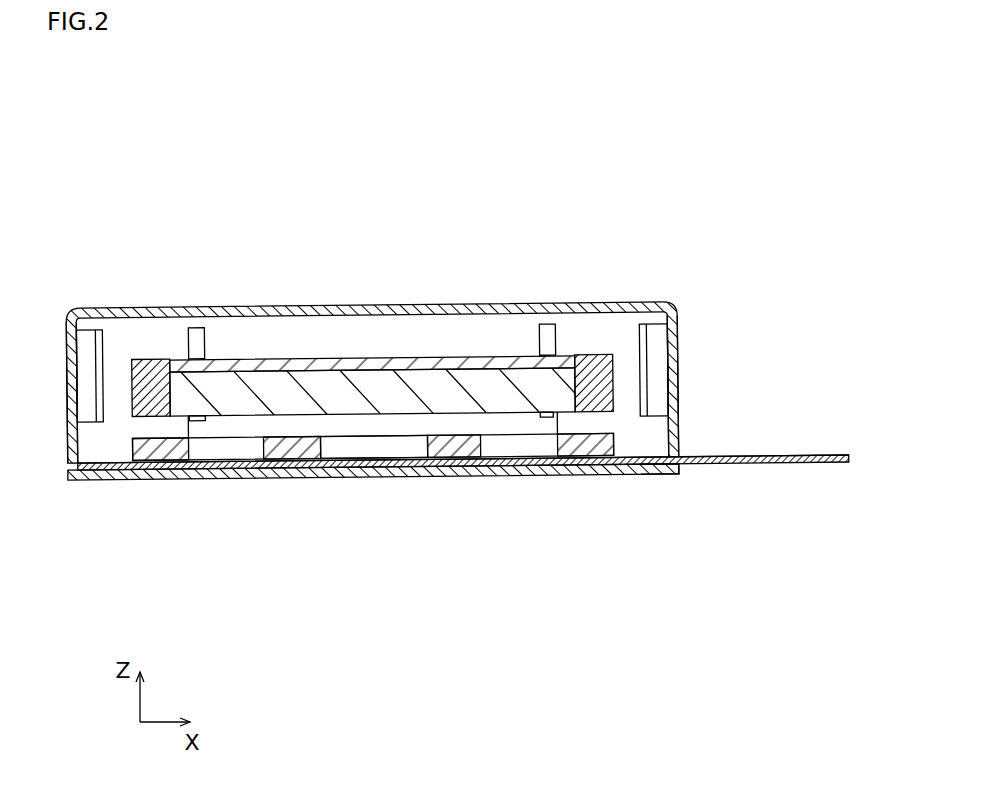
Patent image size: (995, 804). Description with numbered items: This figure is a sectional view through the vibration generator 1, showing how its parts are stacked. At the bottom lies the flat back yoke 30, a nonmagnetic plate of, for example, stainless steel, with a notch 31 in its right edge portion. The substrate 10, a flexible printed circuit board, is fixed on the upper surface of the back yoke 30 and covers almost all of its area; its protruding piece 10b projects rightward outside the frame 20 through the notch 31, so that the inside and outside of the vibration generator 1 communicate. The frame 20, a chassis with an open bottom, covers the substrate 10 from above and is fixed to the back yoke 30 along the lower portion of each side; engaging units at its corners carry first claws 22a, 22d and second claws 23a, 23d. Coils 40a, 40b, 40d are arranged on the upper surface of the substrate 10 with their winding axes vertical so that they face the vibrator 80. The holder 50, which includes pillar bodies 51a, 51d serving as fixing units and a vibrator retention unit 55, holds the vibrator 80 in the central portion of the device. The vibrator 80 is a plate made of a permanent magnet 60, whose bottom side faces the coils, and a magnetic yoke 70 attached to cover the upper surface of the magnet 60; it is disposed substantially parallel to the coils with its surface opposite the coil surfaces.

The vibration generator 1 is at (102, 103).
The substrate 10 is at (728, 467).
The protruding piece 10b is at (775, 460).
The frame 20 is at (277, 305).
The first claw 22a is at (542, 330).
The first claw 22d is at (197, 352).
The second claw 23a is at (660, 348).
The second claw 23d is at (83, 340).
The back yoke 30 is at (452, 477).
The notch 31 is at (675, 473).
The coil 40a is at (400, 440).
The coil 40b is at (592, 443).
The coil 40d is at (297, 445).
The holder 50 is at (583, 352).
The pillar body 51a is at (623, 343).
The pillar body 51d is at (130, 332).
The vibrator retention unit 55 is at (157, 410).
The magnet 60 is at (412, 387).
The yoke 70 is at (350, 360).
The vibrator 80 is at (360, 269).